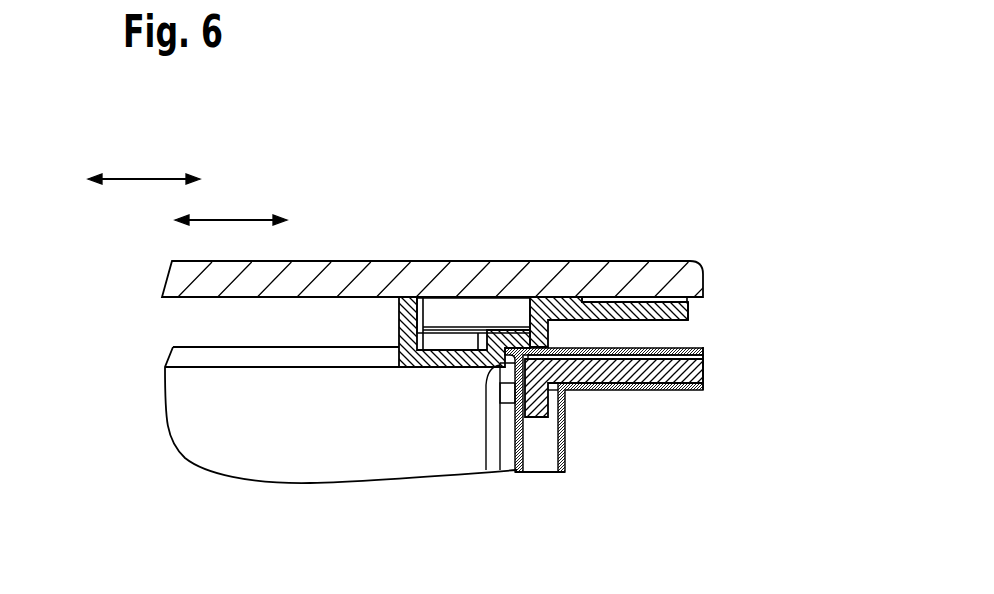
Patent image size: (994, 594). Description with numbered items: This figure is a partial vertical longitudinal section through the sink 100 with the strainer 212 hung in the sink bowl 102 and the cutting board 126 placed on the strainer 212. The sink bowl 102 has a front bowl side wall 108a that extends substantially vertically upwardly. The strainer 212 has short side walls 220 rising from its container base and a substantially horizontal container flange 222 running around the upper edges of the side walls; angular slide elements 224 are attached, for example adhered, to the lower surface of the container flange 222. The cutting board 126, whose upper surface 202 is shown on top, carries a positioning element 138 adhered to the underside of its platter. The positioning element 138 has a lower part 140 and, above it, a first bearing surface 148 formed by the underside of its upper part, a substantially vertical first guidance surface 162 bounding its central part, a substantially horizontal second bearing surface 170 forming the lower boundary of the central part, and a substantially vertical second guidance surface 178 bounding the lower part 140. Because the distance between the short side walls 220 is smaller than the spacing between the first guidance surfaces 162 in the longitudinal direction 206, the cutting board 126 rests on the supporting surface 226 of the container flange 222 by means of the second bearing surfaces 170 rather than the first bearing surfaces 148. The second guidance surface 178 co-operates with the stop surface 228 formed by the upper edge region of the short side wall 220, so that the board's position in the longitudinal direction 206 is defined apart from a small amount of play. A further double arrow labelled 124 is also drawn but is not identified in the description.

The sink 100 is at (124, 315).
The sink bowl 102 is at (703, 383).
The front bowl side wall 108a is at (557, 441).
The width of pane 124 is at (147, 177).
The cutting board 126 is at (308, 278).
The positioning element 138 is at (407, 298).
The lower part 140 is at (400, 367).
The first bearing surface 148 is at (646, 382).
The first guidance surface 162 is at (553, 332).
The second bearing surface 170 is at (530, 330).
The second guidance surface 178 is at (500, 332).
The upper surface 202 is at (421, 257).
The longitudinal direction 206 is at (232, 218).
The strainer 212 is at (703, 350).
The short side wall 220 is at (515, 438).
The container flange 222 is at (658, 330).
The angular slide element 224 is at (690, 390).
The supporting surface 226 is at (690, 345).
The stop surface 228 is at (504, 446).